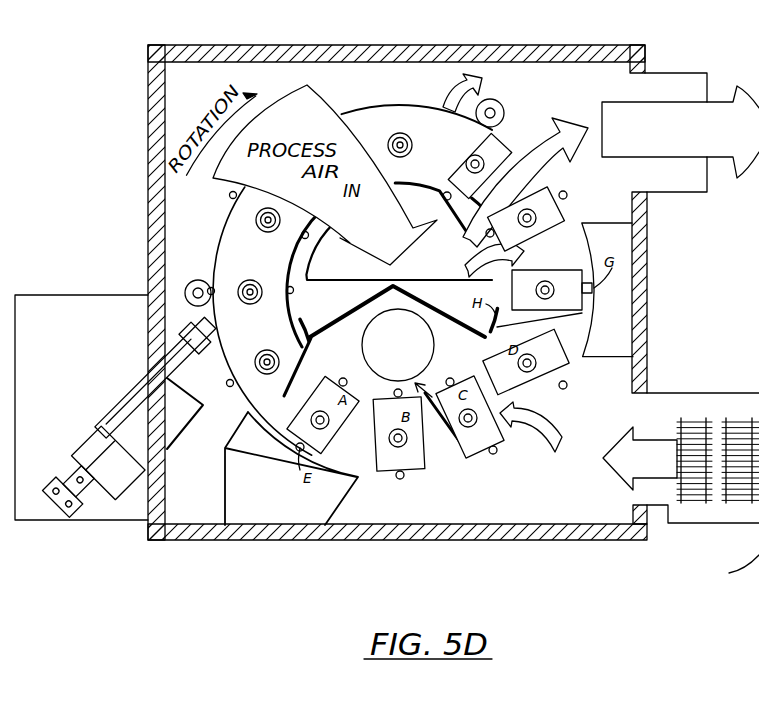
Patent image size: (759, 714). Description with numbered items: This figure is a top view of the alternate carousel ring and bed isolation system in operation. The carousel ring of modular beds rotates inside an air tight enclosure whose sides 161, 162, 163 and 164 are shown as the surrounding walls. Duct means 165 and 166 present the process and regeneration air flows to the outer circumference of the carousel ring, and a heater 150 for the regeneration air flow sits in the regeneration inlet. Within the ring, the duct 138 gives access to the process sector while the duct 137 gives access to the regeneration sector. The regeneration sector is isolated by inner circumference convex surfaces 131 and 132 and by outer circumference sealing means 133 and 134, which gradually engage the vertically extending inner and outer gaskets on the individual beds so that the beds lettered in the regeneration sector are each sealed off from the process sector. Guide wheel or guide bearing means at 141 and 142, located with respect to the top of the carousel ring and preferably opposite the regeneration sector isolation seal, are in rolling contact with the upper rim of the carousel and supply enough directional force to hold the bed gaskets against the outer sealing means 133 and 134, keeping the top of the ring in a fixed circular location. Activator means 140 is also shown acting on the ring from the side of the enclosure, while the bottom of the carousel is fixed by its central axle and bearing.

The inner circumference convex surface 131 is at (473, 350).
The inner circumference convex surface 132 is at (312, 320).
The outer circumference sealing means 133 is at (588, 347).
The outer circumference sealing means 134 is at (265, 436).
The regeneration sector duct 137 is at (364, 350).
The process sector duct 138 is at (448, 271).
The activator means 140 is at (132, 418).
The guide wheel or guide bearing means 141 is at (200, 280).
The guide wheel or guide bearing means 142 is at (504, 113).
The heater 150 is at (697, 420).
The side of the unit 161 is at (353, 540).
The side of the unit 162 is at (148, 186).
The side of the unit 163 is at (340, 45).
The side of the unit 164 is at (648, 276).
The duct means 165 is at (705, 87).
The duct means 166 is at (727, 415).